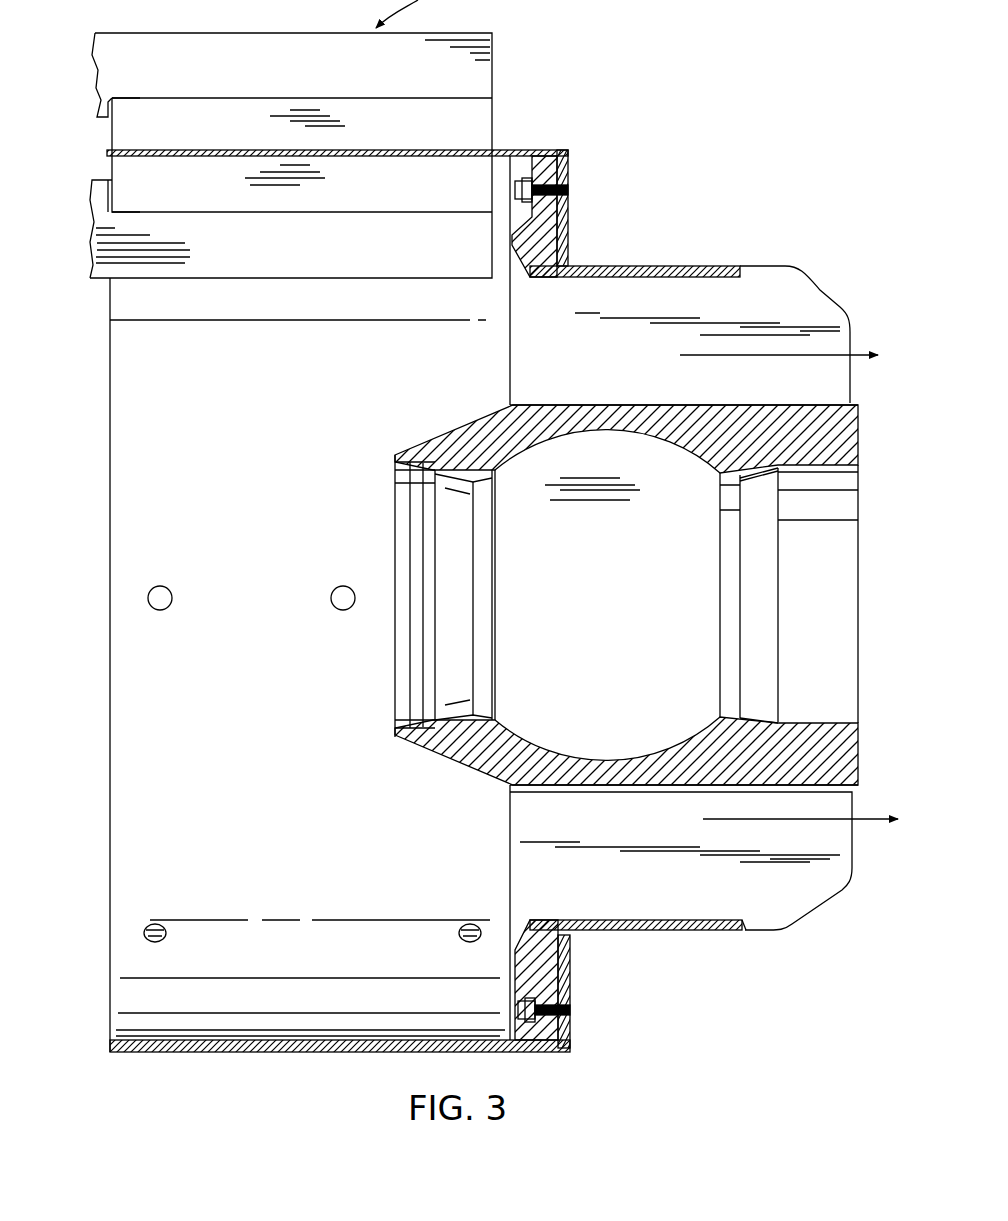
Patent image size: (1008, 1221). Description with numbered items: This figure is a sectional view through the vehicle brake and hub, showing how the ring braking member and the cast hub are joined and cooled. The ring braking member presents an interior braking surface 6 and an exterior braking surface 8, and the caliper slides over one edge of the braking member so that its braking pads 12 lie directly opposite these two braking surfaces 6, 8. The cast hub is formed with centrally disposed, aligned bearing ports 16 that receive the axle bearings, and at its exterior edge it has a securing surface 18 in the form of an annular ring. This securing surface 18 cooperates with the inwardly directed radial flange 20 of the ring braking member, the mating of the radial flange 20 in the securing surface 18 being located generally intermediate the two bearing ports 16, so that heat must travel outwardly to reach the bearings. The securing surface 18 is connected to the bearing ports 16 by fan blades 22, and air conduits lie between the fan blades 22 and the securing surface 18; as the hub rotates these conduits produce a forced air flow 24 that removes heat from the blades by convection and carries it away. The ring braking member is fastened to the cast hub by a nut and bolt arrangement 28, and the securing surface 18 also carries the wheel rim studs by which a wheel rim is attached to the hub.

The interior braking surface 6 is at (413, 158).
The exterior braking surface 8 is at (510, 150).
The braking pads 12 is at (130, 124).
The bearing ports 16 is at (450, 660).
The securing surface 18 is at (545, 245).
The radial flange 20 is at (565, 216).
The fan blades 22 is at (765, 900).
The air flow 24 is at (815, 357).
The nut and bolt arrangement 28 is at (574, 190).